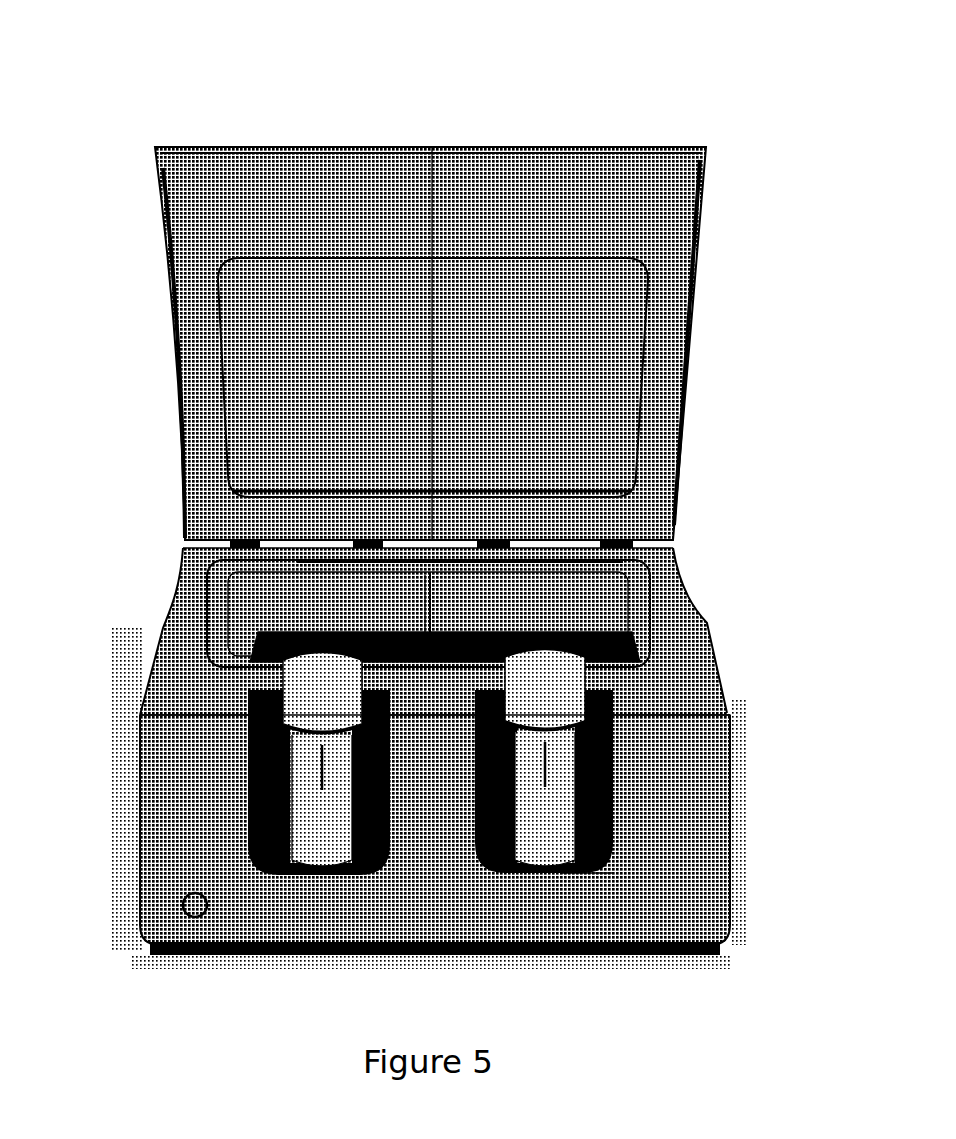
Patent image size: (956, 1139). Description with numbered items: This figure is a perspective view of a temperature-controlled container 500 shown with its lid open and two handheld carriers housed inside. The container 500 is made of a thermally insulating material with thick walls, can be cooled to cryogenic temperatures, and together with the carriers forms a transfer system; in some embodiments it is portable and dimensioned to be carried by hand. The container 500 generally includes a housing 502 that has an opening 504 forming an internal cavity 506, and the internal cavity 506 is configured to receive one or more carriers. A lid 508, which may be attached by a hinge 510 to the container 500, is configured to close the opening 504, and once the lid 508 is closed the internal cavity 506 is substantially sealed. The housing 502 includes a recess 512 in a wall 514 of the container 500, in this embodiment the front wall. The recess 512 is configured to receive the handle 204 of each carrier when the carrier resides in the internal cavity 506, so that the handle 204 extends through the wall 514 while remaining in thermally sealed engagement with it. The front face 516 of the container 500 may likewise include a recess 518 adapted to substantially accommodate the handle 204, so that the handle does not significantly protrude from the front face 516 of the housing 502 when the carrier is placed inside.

The temperature-controlled container 500 is at (424, 62).
The lid 508 is at (655, 210).
The hinge 510 is at (245, 538).
The housing 502 is at (680, 620).
The opening 504 is at (597, 598).
The internal cavity 506 is at (533, 597).
The recess 512 is at (590, 687).
The handle 204 is at (312, 690).
The wall 514 is at (668, 700).
The front face 516 is at (670, 857).
The recess 518 is at (597, 873).